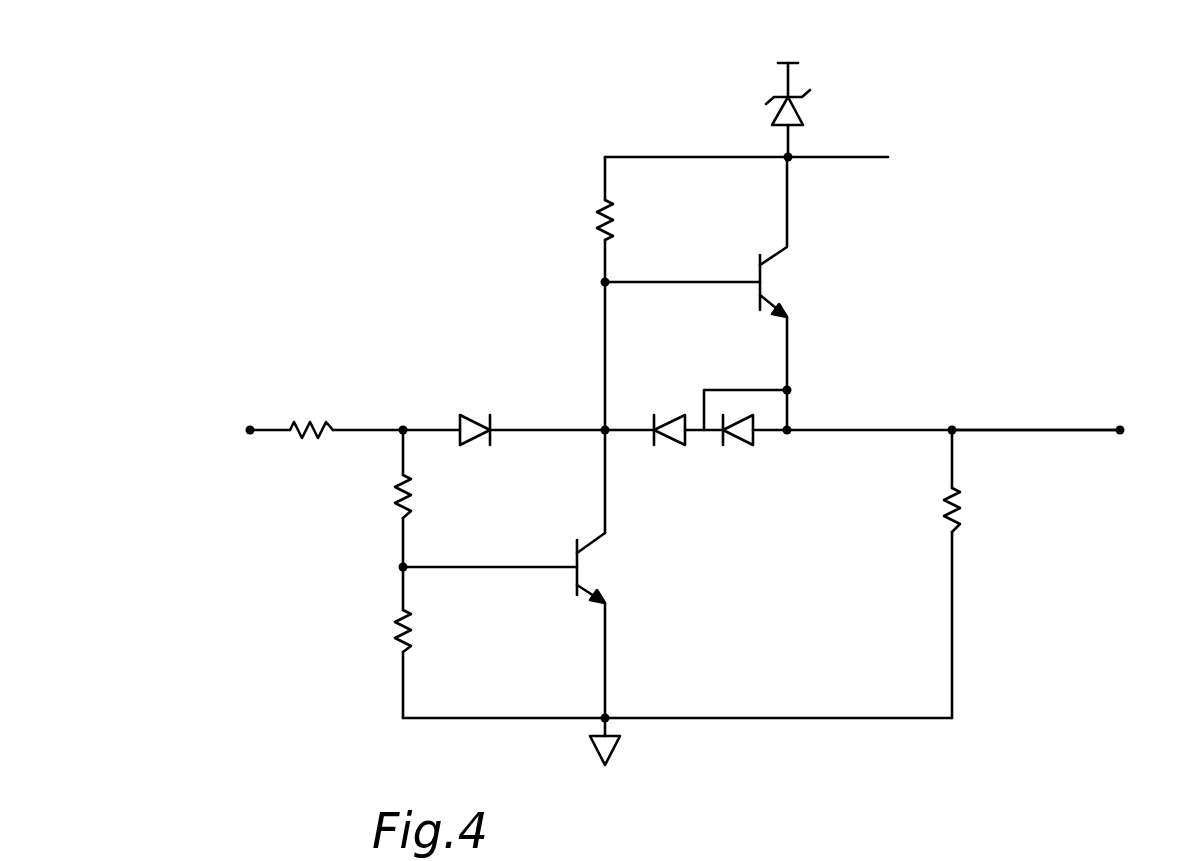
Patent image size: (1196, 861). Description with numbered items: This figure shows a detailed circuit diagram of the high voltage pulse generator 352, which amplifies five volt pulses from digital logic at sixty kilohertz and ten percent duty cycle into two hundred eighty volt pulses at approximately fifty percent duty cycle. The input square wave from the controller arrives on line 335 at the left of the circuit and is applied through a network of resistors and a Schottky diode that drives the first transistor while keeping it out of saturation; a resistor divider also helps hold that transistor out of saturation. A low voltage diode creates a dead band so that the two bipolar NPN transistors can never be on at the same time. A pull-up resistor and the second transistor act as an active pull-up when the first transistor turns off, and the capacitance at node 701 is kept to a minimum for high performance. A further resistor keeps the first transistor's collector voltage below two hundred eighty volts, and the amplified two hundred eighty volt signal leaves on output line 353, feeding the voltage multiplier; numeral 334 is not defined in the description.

The high voltage pulse generator 352 is at (691, 399).
The DC supply voltage 334 is at (785, 80).
The node 701 is at (630, 157).
The line 335 is at (268, 429).
The output line 353 is at (978, 428).